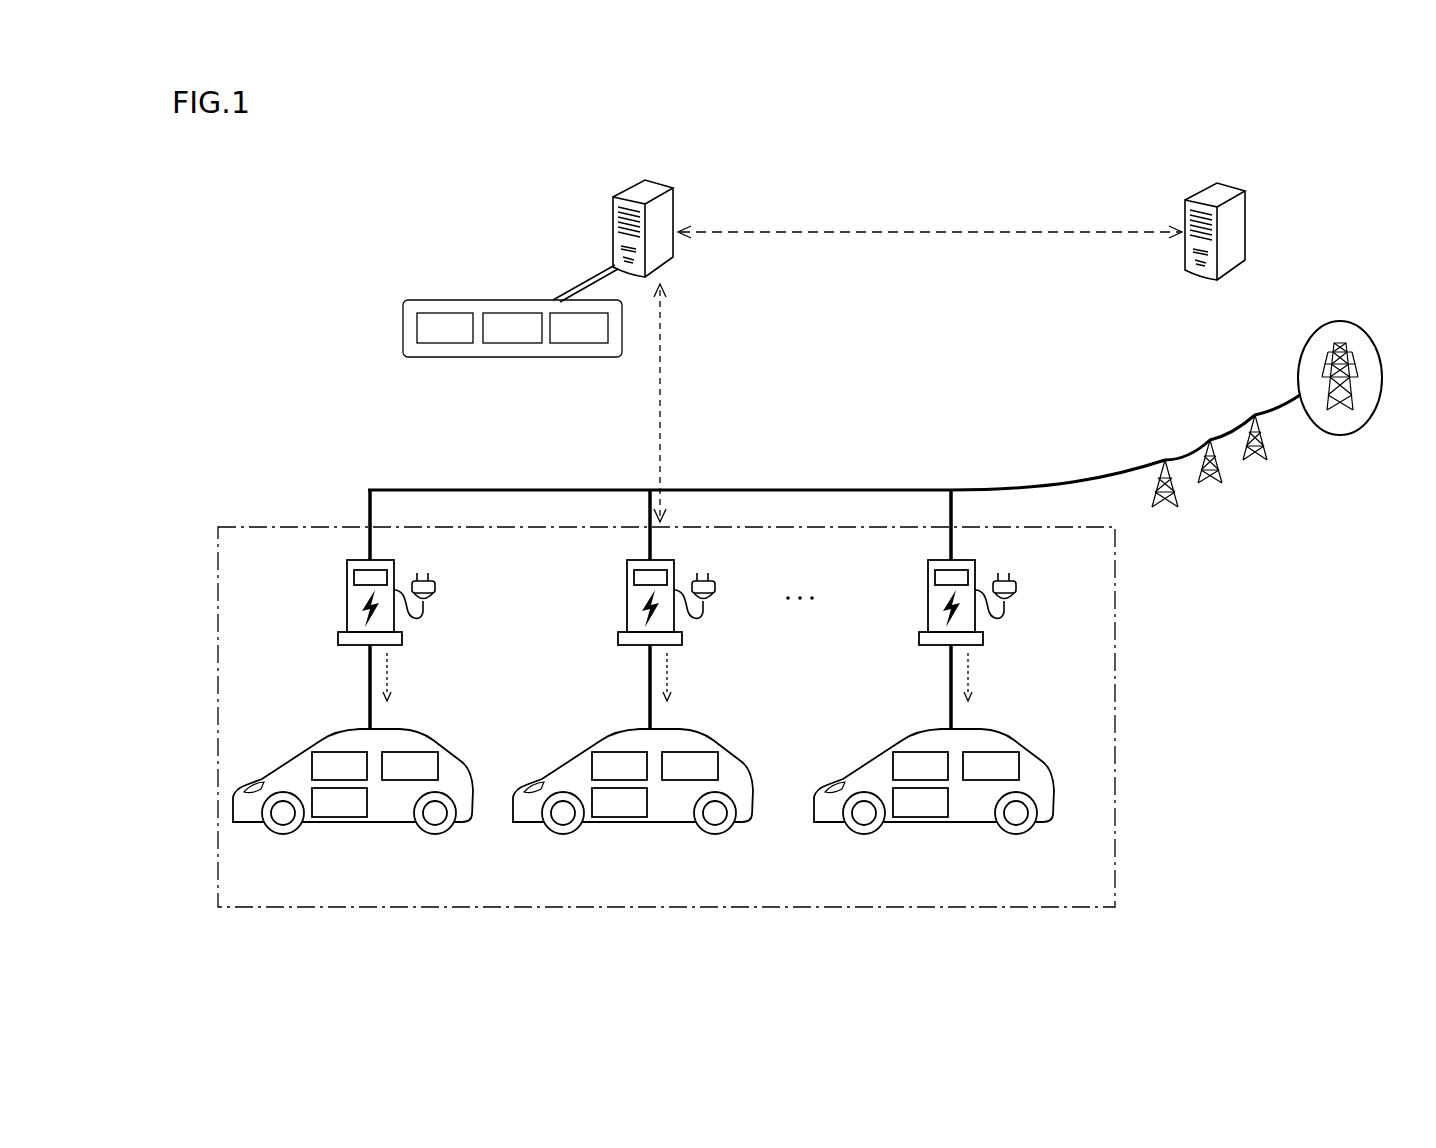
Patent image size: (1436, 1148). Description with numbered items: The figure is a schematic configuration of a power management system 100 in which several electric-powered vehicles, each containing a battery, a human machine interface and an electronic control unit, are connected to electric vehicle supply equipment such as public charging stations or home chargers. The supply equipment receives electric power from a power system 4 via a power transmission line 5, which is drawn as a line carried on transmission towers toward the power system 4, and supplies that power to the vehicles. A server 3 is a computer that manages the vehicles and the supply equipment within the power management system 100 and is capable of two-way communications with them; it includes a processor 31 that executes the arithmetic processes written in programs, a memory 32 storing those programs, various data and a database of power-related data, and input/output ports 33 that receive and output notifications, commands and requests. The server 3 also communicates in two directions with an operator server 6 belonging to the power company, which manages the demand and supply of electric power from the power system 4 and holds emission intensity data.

The power management system 100 is at (318, 188).
The server 3 is at (658, 181).
The power system 4 is at (1357, 330).
The power transmission line 5 is at (1188, 446).
The operator server 6 is at (1226, 184).
The processor 31 is at (445, 344).
The memory 32 is at (511, 344).
The input/output ports 33 is at (580, 344).